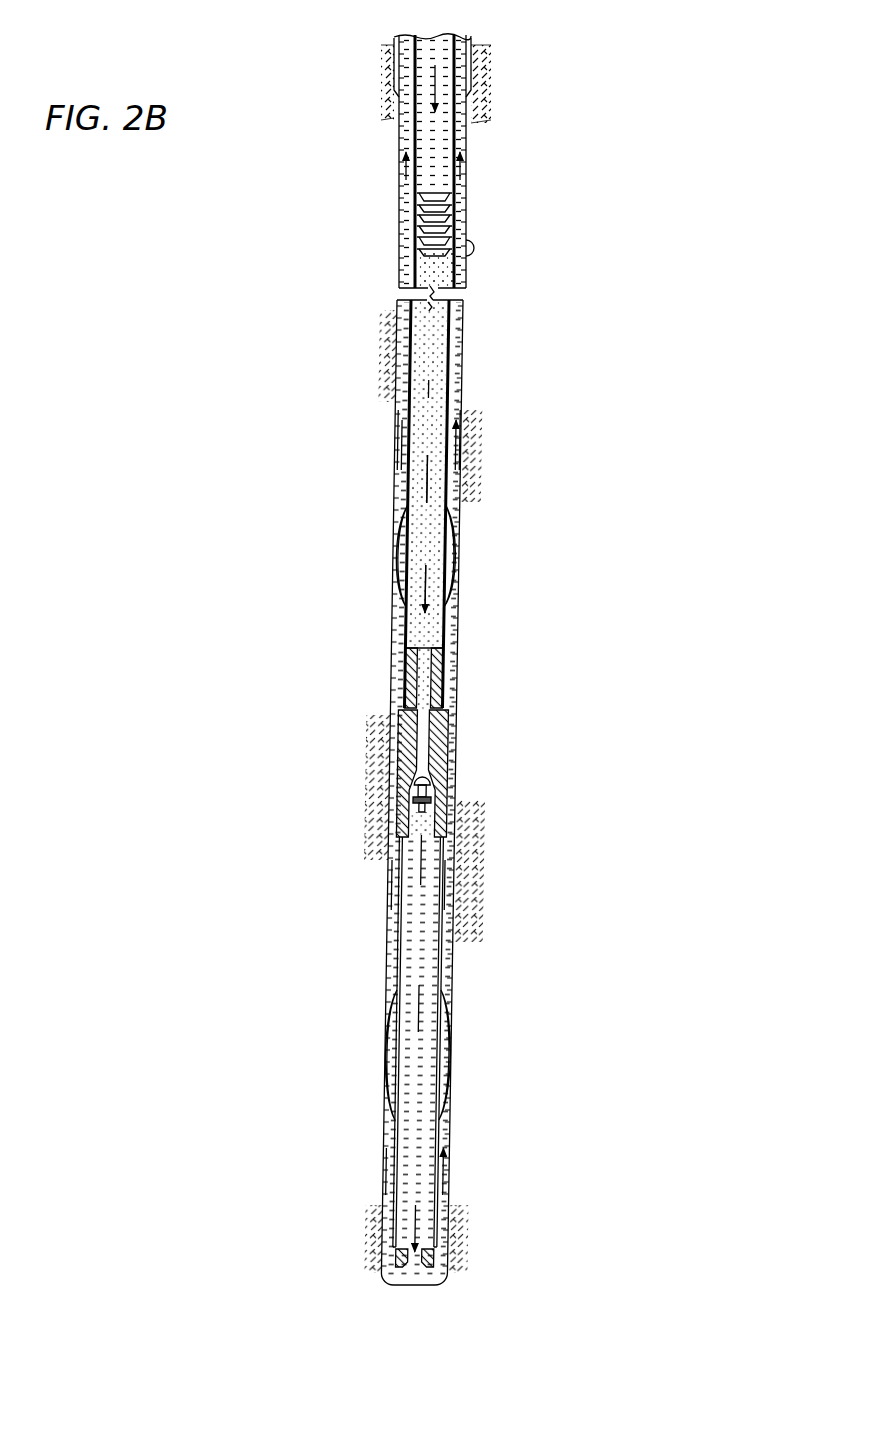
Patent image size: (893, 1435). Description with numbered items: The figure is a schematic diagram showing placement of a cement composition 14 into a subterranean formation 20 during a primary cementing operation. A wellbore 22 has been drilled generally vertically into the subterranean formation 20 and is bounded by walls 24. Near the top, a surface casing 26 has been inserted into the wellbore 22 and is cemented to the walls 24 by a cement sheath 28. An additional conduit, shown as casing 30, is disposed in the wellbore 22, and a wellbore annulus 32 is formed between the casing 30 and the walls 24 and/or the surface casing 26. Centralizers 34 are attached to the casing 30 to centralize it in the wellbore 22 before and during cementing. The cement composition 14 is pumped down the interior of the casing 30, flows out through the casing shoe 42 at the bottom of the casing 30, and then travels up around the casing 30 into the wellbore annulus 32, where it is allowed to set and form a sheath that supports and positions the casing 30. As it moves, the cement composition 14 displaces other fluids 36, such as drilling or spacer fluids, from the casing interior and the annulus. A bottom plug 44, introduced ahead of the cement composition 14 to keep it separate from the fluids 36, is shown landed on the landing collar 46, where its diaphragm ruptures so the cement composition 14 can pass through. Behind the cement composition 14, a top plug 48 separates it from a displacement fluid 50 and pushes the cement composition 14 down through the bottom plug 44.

The cement composition 14 is at (442, 397).
The subterranean formation 20 is at (565, 661).
The wellbore 22 is at (470, 497).
The walls 24 is at (468, 257).
The surface casing 26 is at (478, 50).
The cement sheath 28 is at (484, 69).
The casing 30 is at (455, 425).
The wellbore annulus 32 is at (400, 488).
The centralizers 34 is at (386, 1030).
The fluids 36 is at (458, 848).
The casing shoe 42 is at (378, 1210).
The bottom plug 44 is at (404, 666).
The landing collar 46 is at (397, 740).
The top plug 48 is at (402, 229).
The displacement fluid 50 is at (437, 97).